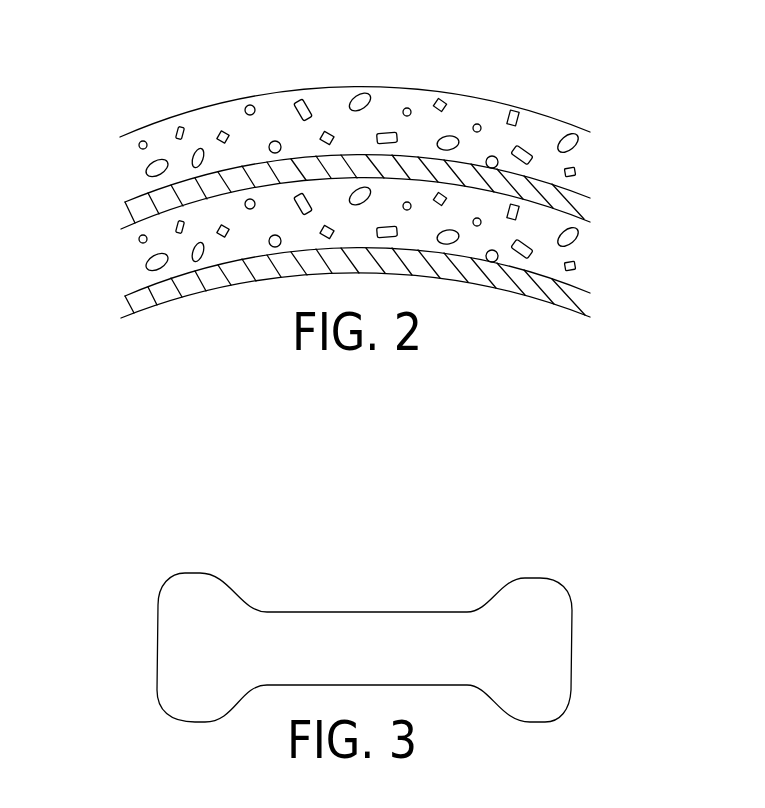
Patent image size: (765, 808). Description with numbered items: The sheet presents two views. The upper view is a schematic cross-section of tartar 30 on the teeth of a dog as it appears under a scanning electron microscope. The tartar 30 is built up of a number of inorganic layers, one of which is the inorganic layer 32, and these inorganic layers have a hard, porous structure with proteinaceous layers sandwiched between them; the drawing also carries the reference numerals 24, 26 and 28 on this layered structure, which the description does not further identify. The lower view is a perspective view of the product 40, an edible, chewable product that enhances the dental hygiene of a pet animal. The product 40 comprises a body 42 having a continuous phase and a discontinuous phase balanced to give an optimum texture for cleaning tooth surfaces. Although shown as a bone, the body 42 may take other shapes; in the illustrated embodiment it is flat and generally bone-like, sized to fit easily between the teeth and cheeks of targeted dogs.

In FIG. 2, the laminated composite material 24 is at (518, 80).
In FIG. 2, the first particle-filled layer 26 is at (587, 160).
In FIG. 2, the first reinforcing layer 28 is at (122, 216).
In FIG. 2, the tartar 30 is at (587, 254).
In FIG. 2, the inorganic layer 32 is at (122, 310).
In FIG. 3, the product 40 is at (525, 598).
In FIG. 3, the body 42 is at (363, 627).